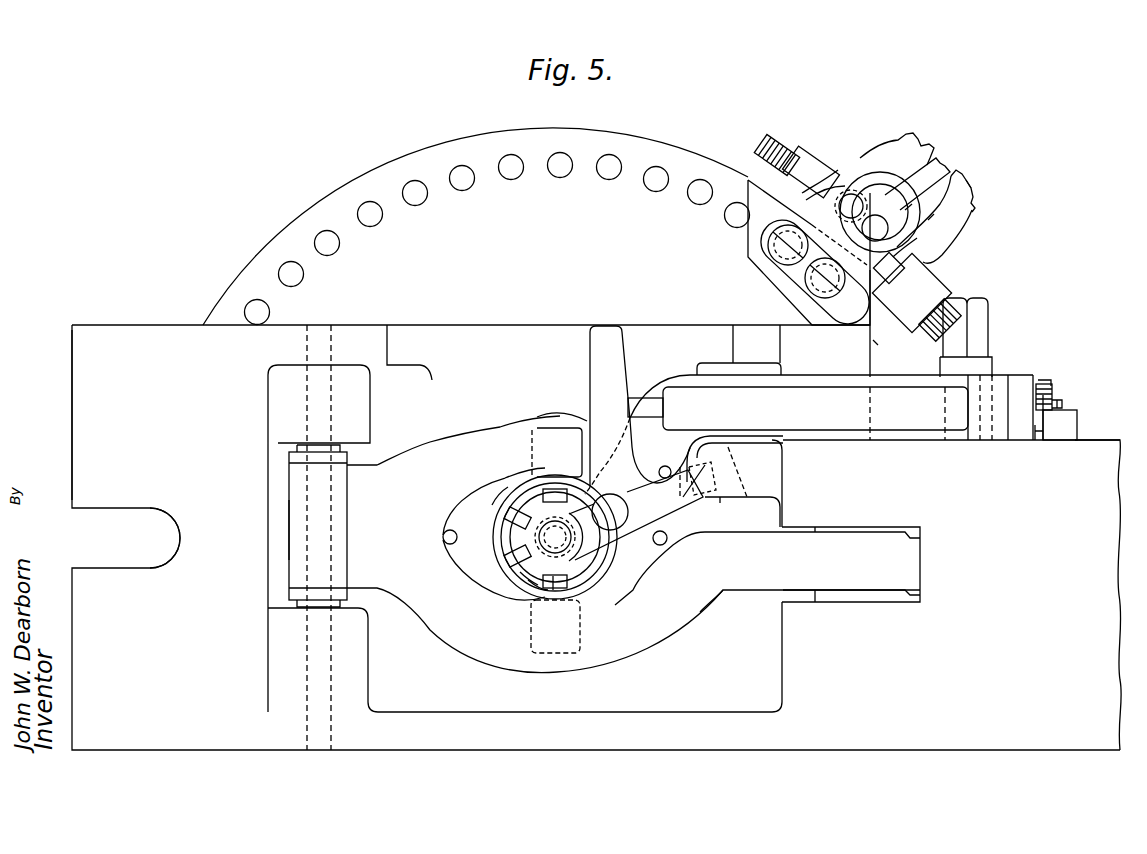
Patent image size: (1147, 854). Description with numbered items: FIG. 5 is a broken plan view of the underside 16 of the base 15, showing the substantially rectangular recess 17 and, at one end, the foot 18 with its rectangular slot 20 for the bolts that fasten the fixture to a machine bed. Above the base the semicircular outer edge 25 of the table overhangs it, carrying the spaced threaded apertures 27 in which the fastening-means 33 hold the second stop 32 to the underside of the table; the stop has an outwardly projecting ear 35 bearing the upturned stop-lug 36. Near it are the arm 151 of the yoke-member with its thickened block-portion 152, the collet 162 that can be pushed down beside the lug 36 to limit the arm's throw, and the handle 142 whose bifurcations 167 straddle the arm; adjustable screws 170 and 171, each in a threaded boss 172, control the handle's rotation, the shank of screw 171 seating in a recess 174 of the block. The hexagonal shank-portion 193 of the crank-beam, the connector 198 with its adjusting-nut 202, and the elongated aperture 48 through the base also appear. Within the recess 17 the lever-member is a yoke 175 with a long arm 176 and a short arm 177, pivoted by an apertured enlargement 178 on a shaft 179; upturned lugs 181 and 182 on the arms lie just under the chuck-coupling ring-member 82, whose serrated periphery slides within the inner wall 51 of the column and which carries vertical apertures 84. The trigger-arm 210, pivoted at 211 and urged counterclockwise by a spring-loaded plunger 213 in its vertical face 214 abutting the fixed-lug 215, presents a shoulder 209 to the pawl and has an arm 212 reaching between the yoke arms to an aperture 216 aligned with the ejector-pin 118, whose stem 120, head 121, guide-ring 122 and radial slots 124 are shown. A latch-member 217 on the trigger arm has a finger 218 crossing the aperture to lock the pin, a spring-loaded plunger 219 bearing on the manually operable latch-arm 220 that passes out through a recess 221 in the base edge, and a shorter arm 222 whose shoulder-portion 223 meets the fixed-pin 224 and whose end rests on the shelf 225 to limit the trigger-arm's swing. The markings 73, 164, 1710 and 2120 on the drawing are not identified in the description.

The base 15 is at (178, 320).
The underside 16 is at (202, 660).
The recess 17 is at (780, 688).
The foot 18 is at (68, 390).
The slot 20 is at (124, 509).
The outer edge 25 is at (440, 148).
The internally-threaded apertures 27 is at (470, 184).
The second stop 32 is at (760, 272).
The fastening-means 33 is at (806, 290).
The ear 35 is at (850, 192).
The stop-lug 36 is at (826, 180).
The elongated aperture 48 is at (886, 533).
The inner wall 51 is at (560, 418).
The pawl arc 73 is at (502, 484).
The chuck-coupling ring-member 82 is at (462, 565).
The vertical apertures 84 is at (452, 530).
The ejector-pin 118 is at (540, 547).
The stem-portion 120 is at (553, 592).
The head 121 is at (525, 575).
The guide-ring 122 is at (530, 582).
The radial slots 124 is at (500, 500).
The handle 142 is at (947, 216).
The arm 151 is at (936, 168).
The block-portion 152 is at (955, 180).
The collet 162 is at (890, 200).
The lever end 164 is at (972, 190).
The bifurcations 167 is at (876, 344).
The adjustable screw 170 is at (800, 146).
The adjustable screw 171 is at (924, 344).
The threaded boss 172 is at (815, 150).
The recess 174 is at (915, 250).
The yoke-shaped member 175 is at (660, 645).
The long arm 176 is at (722, 592).
The short arm 177 is at (470, 440).
The apertured enlargement 178 is at (289, 518).
The shaft 179 is at (308, 554).
The upturned lug 181 is at (533, 440).
The upstanding lug 182 is at (530, 644).
The shank-portion 193 is at (998, 358).
The connector 198 is at (1062, 403).
The adjusting-nut 202 is at (1050, 392).
The shoulder 209 is at (996, 430).
The trigger-arm 210 is at (1022, 377).
The pivot 211 is at (942, 409).
The arm 212 is at (752, 366).
The spring-loaded plunger 213 is at (1038, 444).
The vertical face 214 is at (1043, 381).
The fixed-lug 215 is at (1078, 425).
The aperture 216 is at (539, 537).
The latch-member 217 is at (582, 455).
The finger 218 is at (524, 486).
The spring-loaded plunger 219 is at (642, 398).
The latch-arm 220 is at (590, 362).
The recess 221 is at (395, 325).
The second arm 222 is at (690, 500).
The shoulder-portion 223 is at (690, 460).
The fixed-pin 224 is at (661, 467).
The shelf 225 is at (745, 497).
The key 1710 is at (932, 262).
The arm 2120 is at (588, 556).